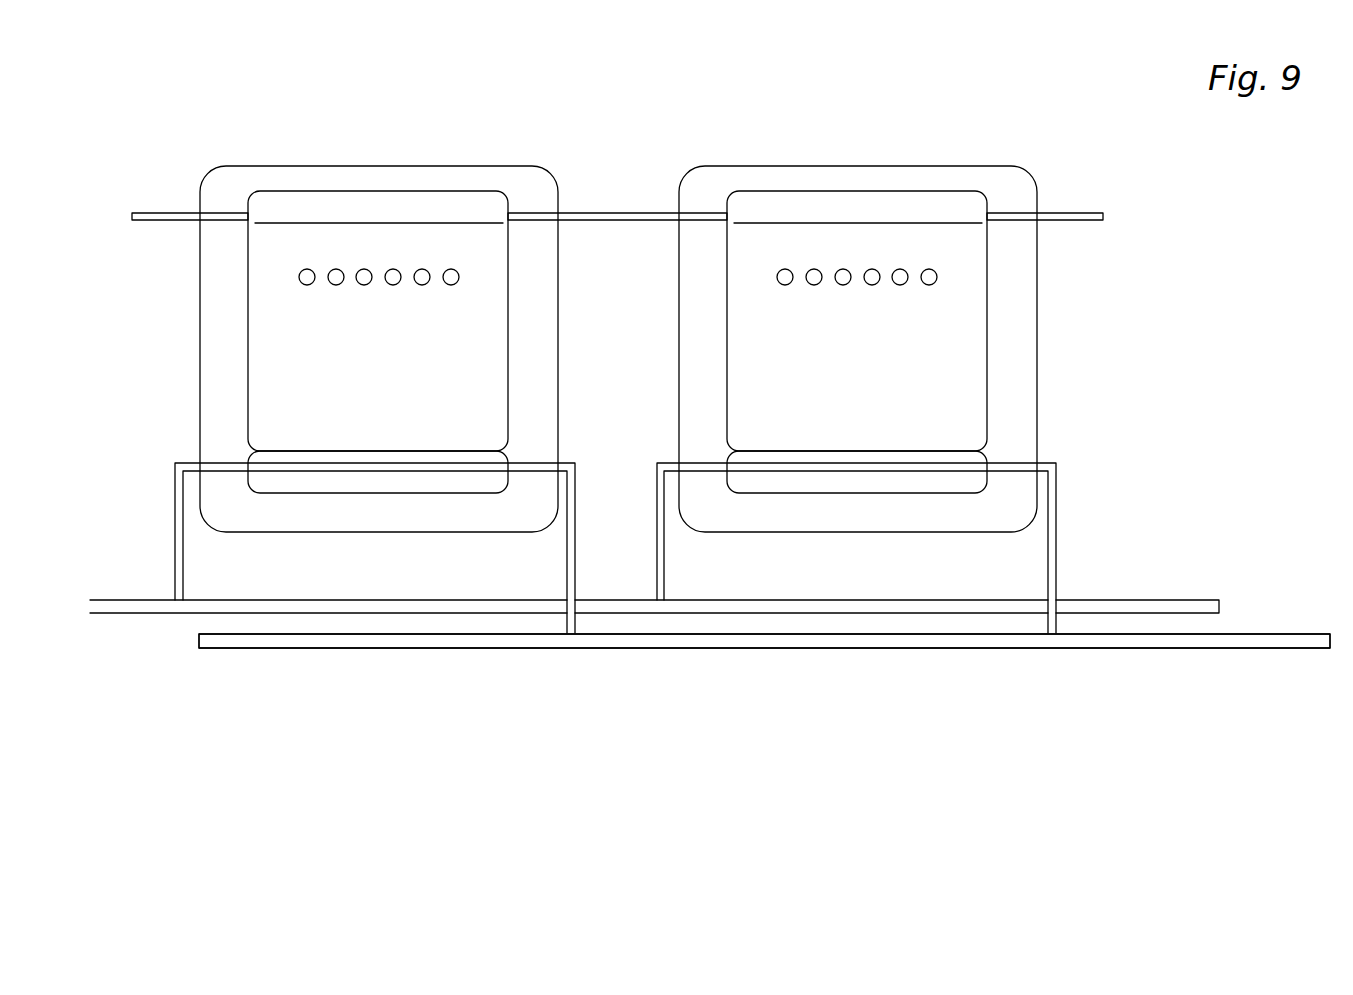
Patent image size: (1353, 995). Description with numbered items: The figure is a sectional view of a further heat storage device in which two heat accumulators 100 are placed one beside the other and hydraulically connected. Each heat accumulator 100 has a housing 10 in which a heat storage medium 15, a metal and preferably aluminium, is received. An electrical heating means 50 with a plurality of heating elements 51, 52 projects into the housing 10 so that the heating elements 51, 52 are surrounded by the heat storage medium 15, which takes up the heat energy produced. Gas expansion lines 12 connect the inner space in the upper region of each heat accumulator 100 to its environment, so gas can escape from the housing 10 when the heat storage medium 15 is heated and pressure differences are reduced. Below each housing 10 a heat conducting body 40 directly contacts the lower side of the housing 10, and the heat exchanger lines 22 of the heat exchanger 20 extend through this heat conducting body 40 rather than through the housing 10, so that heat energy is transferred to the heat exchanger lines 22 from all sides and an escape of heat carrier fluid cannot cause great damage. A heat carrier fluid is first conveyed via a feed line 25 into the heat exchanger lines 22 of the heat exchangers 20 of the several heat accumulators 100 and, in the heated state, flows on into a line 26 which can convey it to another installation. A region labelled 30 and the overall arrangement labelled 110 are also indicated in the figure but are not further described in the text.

The housing 10 is at (524, 322).
The gas expansion line 12 is at (134, 211).
The heat storage medium 15 is at (412, 402).
The heat exchanger 20 is at (1071, 563).
The heat exchanger line 22 is at (573, 468).
The feed line 25 is at (1212, 605).
The line 26 is at (1312, 642).
The cavity 30 is at (256, 526).
The heat conducting body 40 is at (470, 483).
The electrical heating means 50 is at (300, 300).
The heating element 51 is at (308, 269).
The heating element 52 is at (337, 269).
The heat accumulator 100 is at (421, 686).
The assembly 110 is at (157, 772).